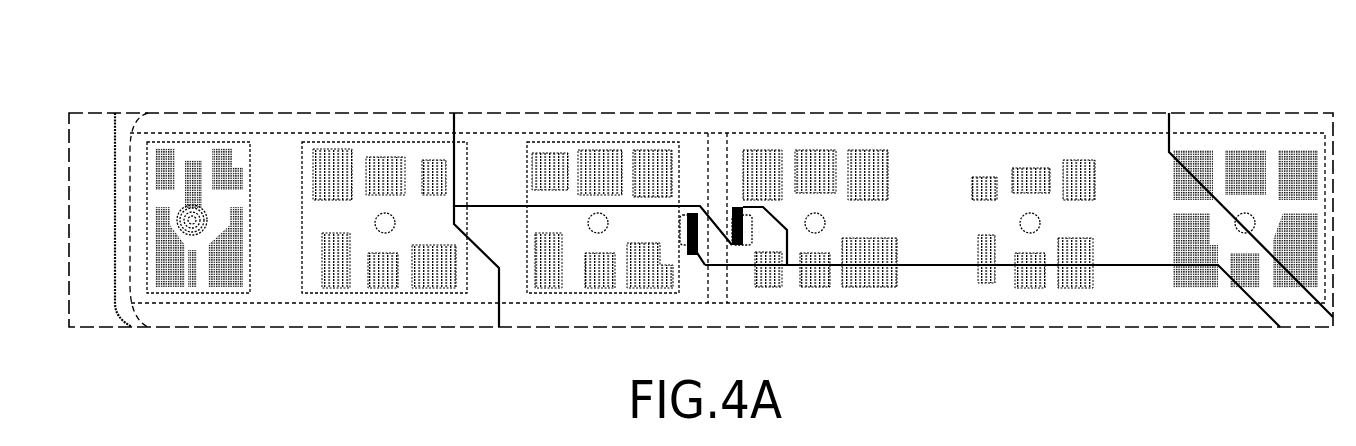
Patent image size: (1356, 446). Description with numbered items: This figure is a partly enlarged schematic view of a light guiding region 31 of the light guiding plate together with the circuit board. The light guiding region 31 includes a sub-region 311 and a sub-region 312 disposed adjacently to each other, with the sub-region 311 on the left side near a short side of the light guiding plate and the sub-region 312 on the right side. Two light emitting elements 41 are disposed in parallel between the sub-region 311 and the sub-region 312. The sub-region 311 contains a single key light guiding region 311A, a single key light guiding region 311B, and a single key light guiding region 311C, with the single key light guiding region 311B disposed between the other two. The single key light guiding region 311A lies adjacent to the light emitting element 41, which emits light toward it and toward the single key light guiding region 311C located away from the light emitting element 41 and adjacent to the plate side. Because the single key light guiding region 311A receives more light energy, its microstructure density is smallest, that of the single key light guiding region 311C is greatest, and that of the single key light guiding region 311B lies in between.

The light guiding region 31 is at (1038, 113).
The sub-region 311 is at (516, 135).
The single key light guiding region 311A is at (680, 162).
The single key light guiding region 311B is at (467, 162).
The single key light guiding region 311C is at (257, 168).
The sub-region 312 is at (925, 135).
The light emitting element 41 is at (683, 213).